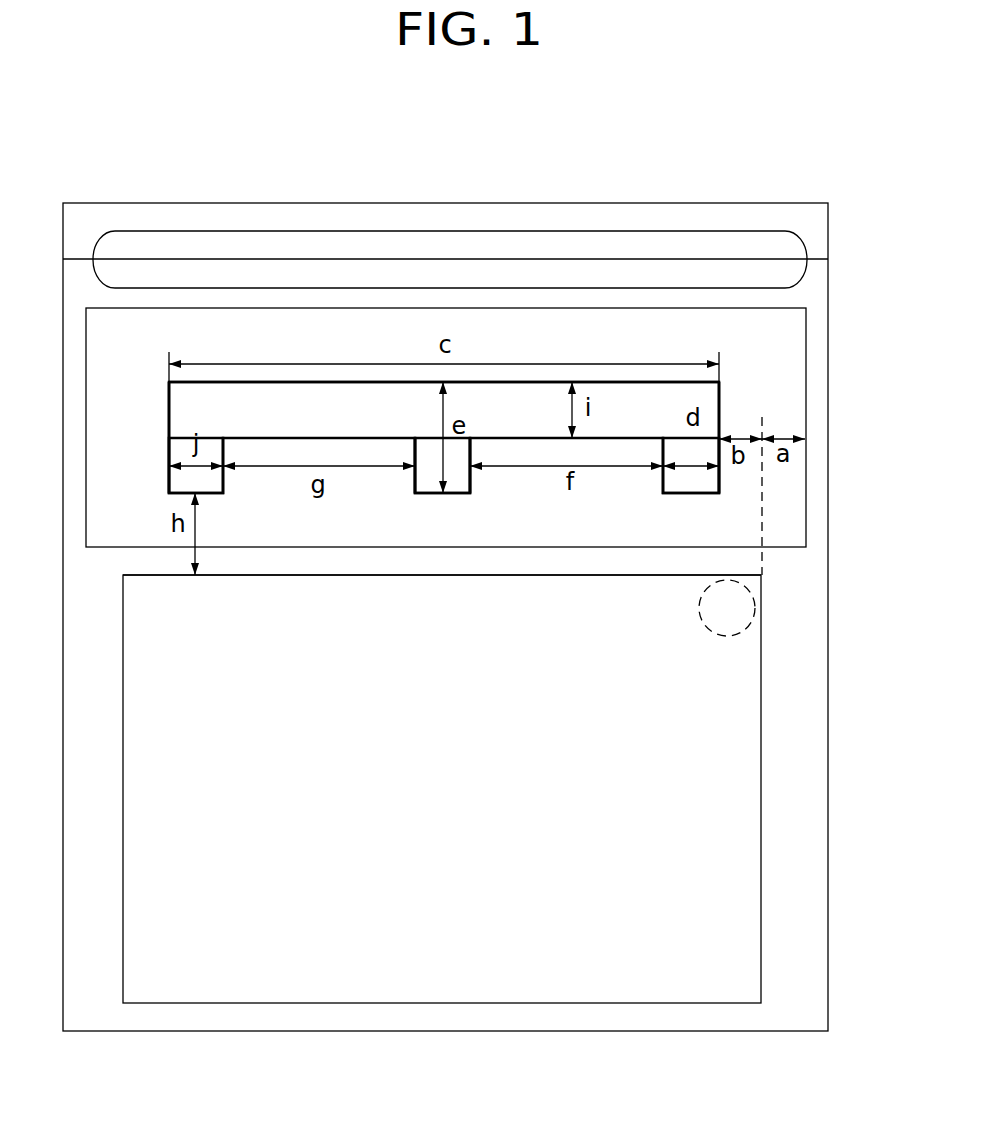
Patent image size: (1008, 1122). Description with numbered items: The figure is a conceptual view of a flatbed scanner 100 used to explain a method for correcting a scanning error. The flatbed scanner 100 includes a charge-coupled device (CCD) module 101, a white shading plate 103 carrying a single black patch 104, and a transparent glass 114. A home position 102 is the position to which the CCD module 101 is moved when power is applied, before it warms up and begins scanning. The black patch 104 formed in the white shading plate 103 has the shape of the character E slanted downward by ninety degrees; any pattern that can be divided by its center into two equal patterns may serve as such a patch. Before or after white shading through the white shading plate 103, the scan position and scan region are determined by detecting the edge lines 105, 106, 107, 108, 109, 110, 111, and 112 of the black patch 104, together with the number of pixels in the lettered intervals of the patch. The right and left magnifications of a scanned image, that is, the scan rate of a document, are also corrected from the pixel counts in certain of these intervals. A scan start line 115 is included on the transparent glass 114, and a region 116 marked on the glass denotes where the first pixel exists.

The flatbed scanner 100 is at (433, 203).
The charge-coupled device (CCD) module 101 is at (661, 231).
The home position 102 is at (760, 259).
The white shading plate 103 is at (790, 308).
The black patch 104 is at (444, 437).
The edge line 105 is at (622, 382).
The edge line 106 is at (720, 398).
The edge line 107 is at (168, 400).
The edge line 108 is at (413, 477).
The edge line 109 is at (472, 478).
The edge line 110 is at (207, 494).
The edge line 111 is at (443, 493).
The edge line 112 is at (700, 494).
The transparent glass 114 is at (442, 789).
The scan start line 115 is at (437, 575).
The region at which a first pixel exists 116 is at (727, 636).